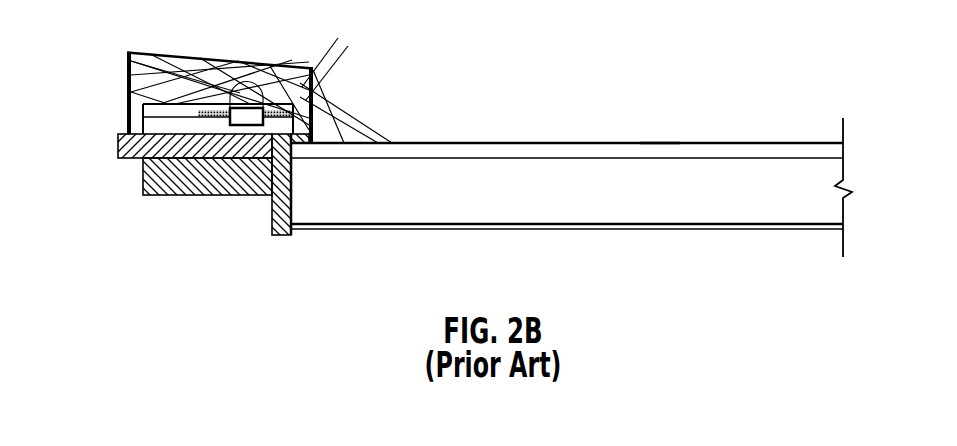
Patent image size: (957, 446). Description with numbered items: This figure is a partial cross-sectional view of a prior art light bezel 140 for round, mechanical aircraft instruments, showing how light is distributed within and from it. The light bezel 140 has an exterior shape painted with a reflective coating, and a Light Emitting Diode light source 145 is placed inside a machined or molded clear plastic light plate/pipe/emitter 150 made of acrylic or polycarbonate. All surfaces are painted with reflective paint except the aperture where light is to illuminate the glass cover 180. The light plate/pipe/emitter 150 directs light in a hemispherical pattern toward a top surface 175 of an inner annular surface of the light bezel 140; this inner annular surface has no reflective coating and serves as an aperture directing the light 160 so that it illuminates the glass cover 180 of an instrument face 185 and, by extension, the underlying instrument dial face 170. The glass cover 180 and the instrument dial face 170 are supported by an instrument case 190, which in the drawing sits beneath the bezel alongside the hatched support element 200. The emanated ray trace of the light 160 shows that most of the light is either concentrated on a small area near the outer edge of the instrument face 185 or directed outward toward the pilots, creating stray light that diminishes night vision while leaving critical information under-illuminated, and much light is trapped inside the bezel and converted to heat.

The light bezel 140 is at (127, 131).
The Light Emitting Diode (LED) light source 145 is at (235, 72).
The light plate/pipe/emitter 150 is at (268, 37).
The light 160 is at (420, 143).
The instrument dial face 170 is at (415, 265).
The top surface 175 is at (568, 142).
The glass cover 180 is at (325, 182).
The instrument face 185 is at (693, 117).
The instrument case 190 is at (170, 232).
The substrate 200 is at (107, 197).